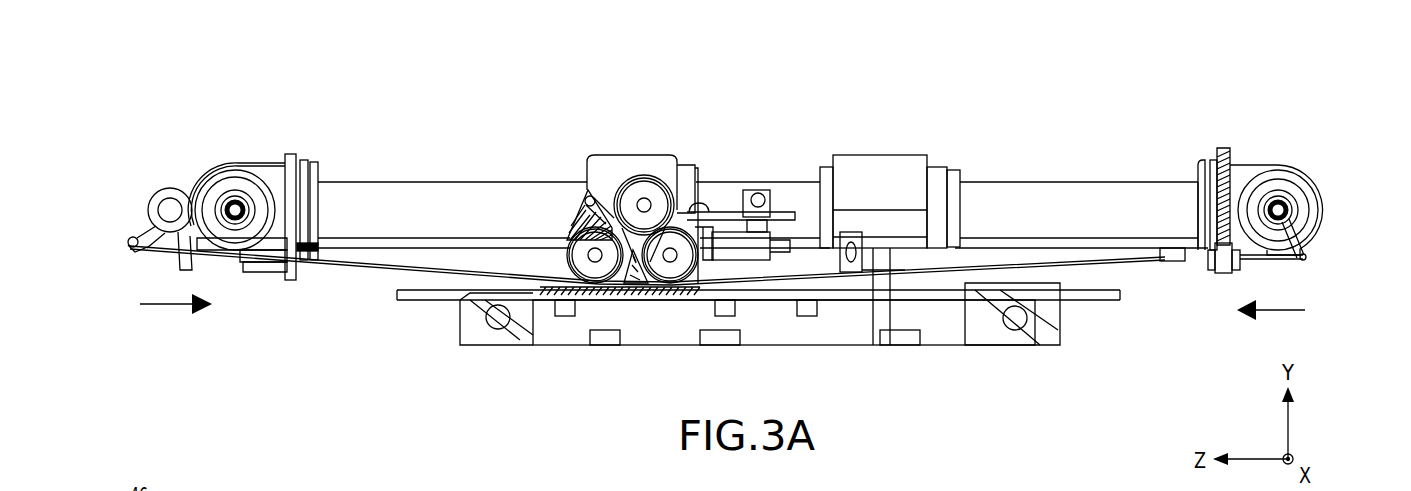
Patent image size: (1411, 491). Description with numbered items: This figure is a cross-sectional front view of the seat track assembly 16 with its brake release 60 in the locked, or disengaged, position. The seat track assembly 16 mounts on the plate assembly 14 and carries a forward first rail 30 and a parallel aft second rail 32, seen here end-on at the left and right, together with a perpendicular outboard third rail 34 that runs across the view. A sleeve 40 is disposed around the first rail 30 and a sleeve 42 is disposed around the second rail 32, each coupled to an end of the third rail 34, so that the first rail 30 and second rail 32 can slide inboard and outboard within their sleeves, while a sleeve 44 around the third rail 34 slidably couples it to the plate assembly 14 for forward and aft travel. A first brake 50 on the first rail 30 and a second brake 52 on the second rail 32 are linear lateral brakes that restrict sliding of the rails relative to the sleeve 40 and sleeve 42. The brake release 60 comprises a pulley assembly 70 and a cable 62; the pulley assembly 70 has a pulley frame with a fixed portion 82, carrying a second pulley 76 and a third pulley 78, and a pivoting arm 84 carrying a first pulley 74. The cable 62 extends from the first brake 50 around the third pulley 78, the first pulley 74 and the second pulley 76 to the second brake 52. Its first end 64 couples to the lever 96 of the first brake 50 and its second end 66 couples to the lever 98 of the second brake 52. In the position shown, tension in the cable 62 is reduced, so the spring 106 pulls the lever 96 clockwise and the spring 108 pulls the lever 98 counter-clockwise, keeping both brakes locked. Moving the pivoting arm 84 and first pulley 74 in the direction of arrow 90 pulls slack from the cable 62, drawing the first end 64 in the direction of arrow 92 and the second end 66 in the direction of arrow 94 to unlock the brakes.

The plate assembly 14 is at (1050, 320).
The seat track assembly 16 is at (188, 90).
The first rail 30 is at (233, 198).
The second rail 32 is at (1305, 200).
The third rail 34 is at (1100, 200).
The sleeve 40 is at (258, 185).
The sleeve 42 is at (1305, 178).
The sleeve 44 is at (895, 165).
The first brake 50 is at (160, 168).
The second brake 52 is at (1332, 243).
The brake release 60 is at (708, 104).
The cable 62 is at (348, 272).
The first end 64 is at (215, 265).
The second end 66 is at (1170, 262).
The pulley assembly 70 is at (708, 192).
The first pulley 74 is at (630, 183).
The second pulley 76 is at (683, 275).
The third pulley 78 is at (570, 258).
The fixed portion 82 is at (572, 215).
The pivoting arm 84 is at (590, 196).
The arrow 90 is at (622, 117).
The arrow 92 is at (165, 305).
The arrow 94 is at (1290, 310).
The lever 96 is at (140, 250).
The lever 98 is at (1290, 262).
The spring 106 is at (160, 200).
The spring 108 is at (1292, 226).